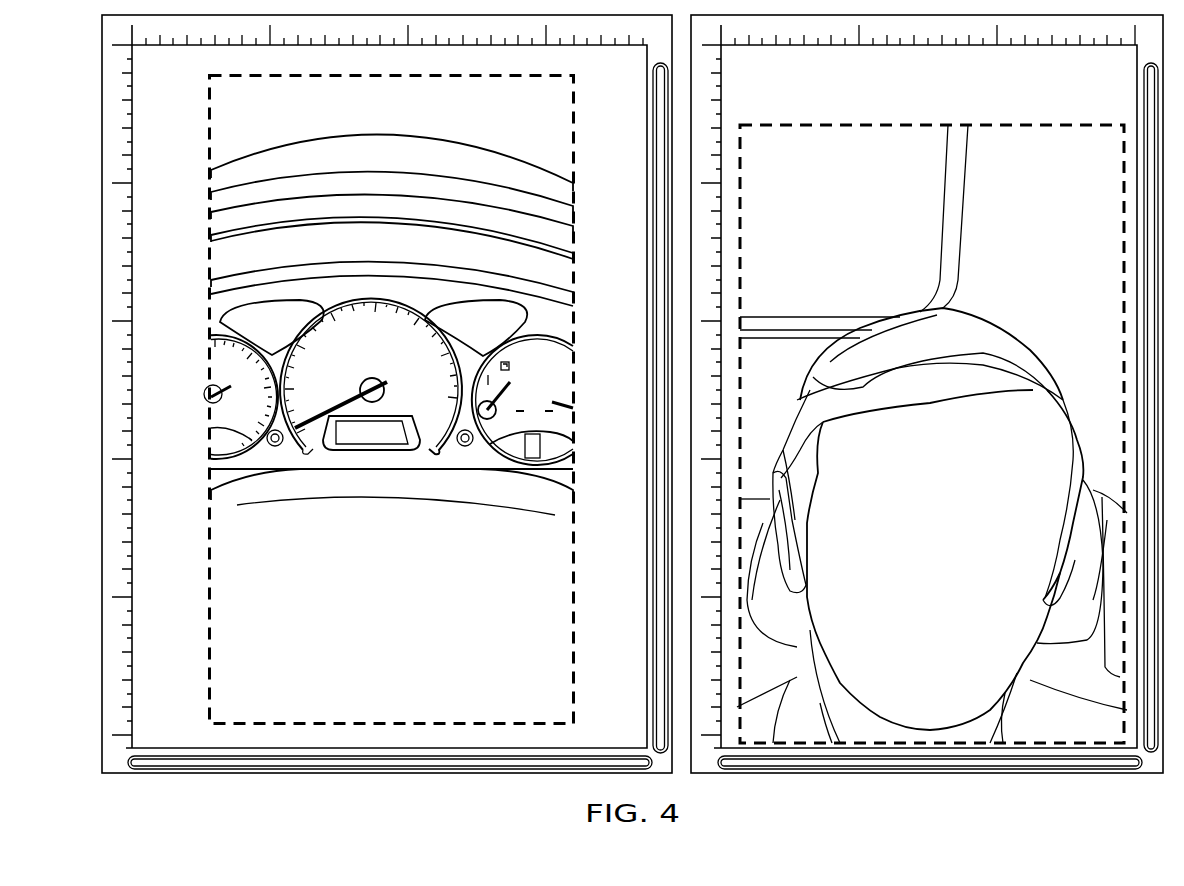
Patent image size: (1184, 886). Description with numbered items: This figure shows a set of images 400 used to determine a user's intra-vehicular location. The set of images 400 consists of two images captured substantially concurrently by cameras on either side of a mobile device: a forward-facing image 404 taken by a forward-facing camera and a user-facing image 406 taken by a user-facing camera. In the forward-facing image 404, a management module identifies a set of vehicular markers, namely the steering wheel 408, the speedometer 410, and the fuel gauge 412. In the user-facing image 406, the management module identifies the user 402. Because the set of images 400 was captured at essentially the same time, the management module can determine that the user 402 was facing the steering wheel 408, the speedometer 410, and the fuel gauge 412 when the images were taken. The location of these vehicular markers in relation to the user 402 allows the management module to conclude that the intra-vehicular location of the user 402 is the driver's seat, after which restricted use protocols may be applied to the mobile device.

The set of images 400 is at (90, 259).
The user 402 is at (995, 328).
The forward-facing image 404 is at (210, 269).
The user-facing image 406 is at (1001, 126).
The steering wheel 408 is at (574, 128).
The speedometer 410 is at (333, 306).
The fuel gauge 412 is at (512, 367).